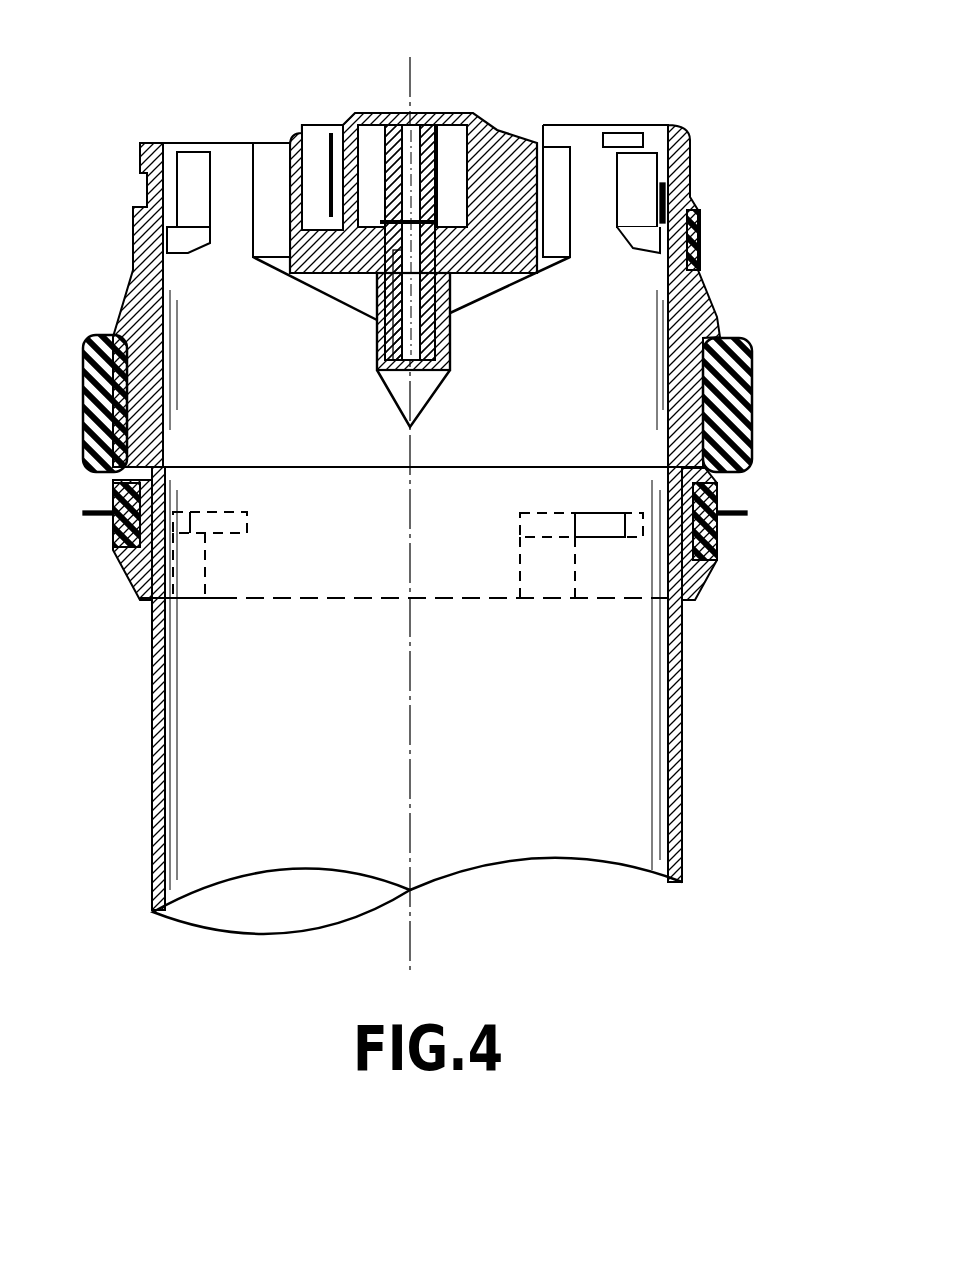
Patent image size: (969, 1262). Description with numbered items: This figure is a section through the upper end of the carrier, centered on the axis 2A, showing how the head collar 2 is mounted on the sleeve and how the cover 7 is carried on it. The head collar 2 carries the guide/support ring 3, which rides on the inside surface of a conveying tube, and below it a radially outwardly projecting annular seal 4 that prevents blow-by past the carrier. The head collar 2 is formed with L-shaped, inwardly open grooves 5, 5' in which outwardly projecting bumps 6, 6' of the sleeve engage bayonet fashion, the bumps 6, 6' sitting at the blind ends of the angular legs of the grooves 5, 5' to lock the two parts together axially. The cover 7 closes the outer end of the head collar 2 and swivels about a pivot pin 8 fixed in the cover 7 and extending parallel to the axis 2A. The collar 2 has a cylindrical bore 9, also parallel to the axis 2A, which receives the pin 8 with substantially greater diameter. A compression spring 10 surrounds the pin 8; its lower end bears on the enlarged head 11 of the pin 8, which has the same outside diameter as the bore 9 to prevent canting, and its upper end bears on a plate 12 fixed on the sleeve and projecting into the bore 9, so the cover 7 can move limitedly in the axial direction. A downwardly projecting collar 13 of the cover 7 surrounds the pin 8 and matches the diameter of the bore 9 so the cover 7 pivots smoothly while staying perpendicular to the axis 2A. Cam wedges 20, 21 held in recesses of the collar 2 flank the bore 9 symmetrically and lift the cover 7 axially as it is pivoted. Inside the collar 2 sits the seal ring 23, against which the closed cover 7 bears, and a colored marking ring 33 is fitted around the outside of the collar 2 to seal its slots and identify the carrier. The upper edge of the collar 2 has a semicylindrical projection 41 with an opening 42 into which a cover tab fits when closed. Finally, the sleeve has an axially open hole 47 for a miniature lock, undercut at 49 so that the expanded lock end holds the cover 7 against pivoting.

The head collar 2 is at (714, 318).
The axis 2A is at (415, 925).
The guide/support ring 3 is at (733, 405).
The annular seal 4 is at (737, 510).
The L-shaped groove 5 is at (123, 673).
The L-shaped groove 5' is at (663, 658).
The bump 6 is at (144, 634).
The bump 6' is at (665, 601).
The cover 7 is at (400, 113).
The pivot pin 8 is at (395, 330).
The cylindrical bore 9 is at (385, 365).
The compression spring 10 is at (393, 270).
The enlarged head 11 is at (395, 400).
The plate 12 is at (335, 292).
The collar 13 is at (320, 265).
The cam wedge 20 is at (358, 113).
The cam wedge 21 is at (453, 135).
The seal ring 23 is at (688, 168).
The colored marking ring 33 is at (700, 238).
The semicylindrical projection 41 is at (680, 137).
The opening 42 is at (627, 143).
The axially open hole 47 is at (320, 173).
The undercut 49 is at (310, 240).